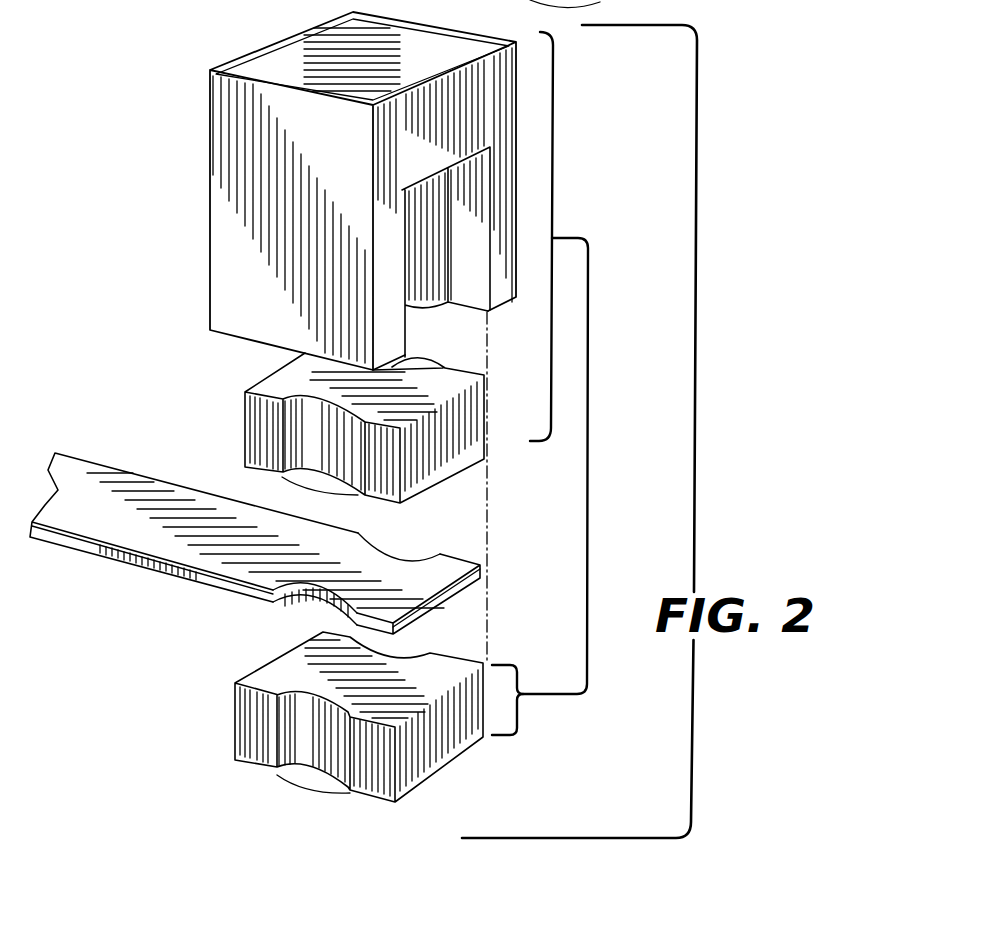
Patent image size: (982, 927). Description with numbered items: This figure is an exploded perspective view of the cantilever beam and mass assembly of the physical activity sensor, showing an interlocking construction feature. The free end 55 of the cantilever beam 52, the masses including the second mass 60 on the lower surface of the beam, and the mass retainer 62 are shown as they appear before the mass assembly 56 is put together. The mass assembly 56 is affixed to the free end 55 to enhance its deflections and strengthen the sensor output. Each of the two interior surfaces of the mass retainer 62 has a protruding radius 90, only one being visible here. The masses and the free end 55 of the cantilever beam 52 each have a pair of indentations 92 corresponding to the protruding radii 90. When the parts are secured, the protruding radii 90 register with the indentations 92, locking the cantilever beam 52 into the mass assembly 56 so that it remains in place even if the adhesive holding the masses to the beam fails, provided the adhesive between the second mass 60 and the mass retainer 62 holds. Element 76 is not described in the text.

The cantilever beam 52 is at (192, 505).
The free end 55 is at (614, 420).
The mass assembly 56 is at (590, 450).
The second mass 60 is at (248, 718).
The mass retainer 62 is at (447, 42).
The outer member 76 is at (646, 2).
The protruding radius 90 is at (413, 286).
The indentations 92 is at (418, 360).